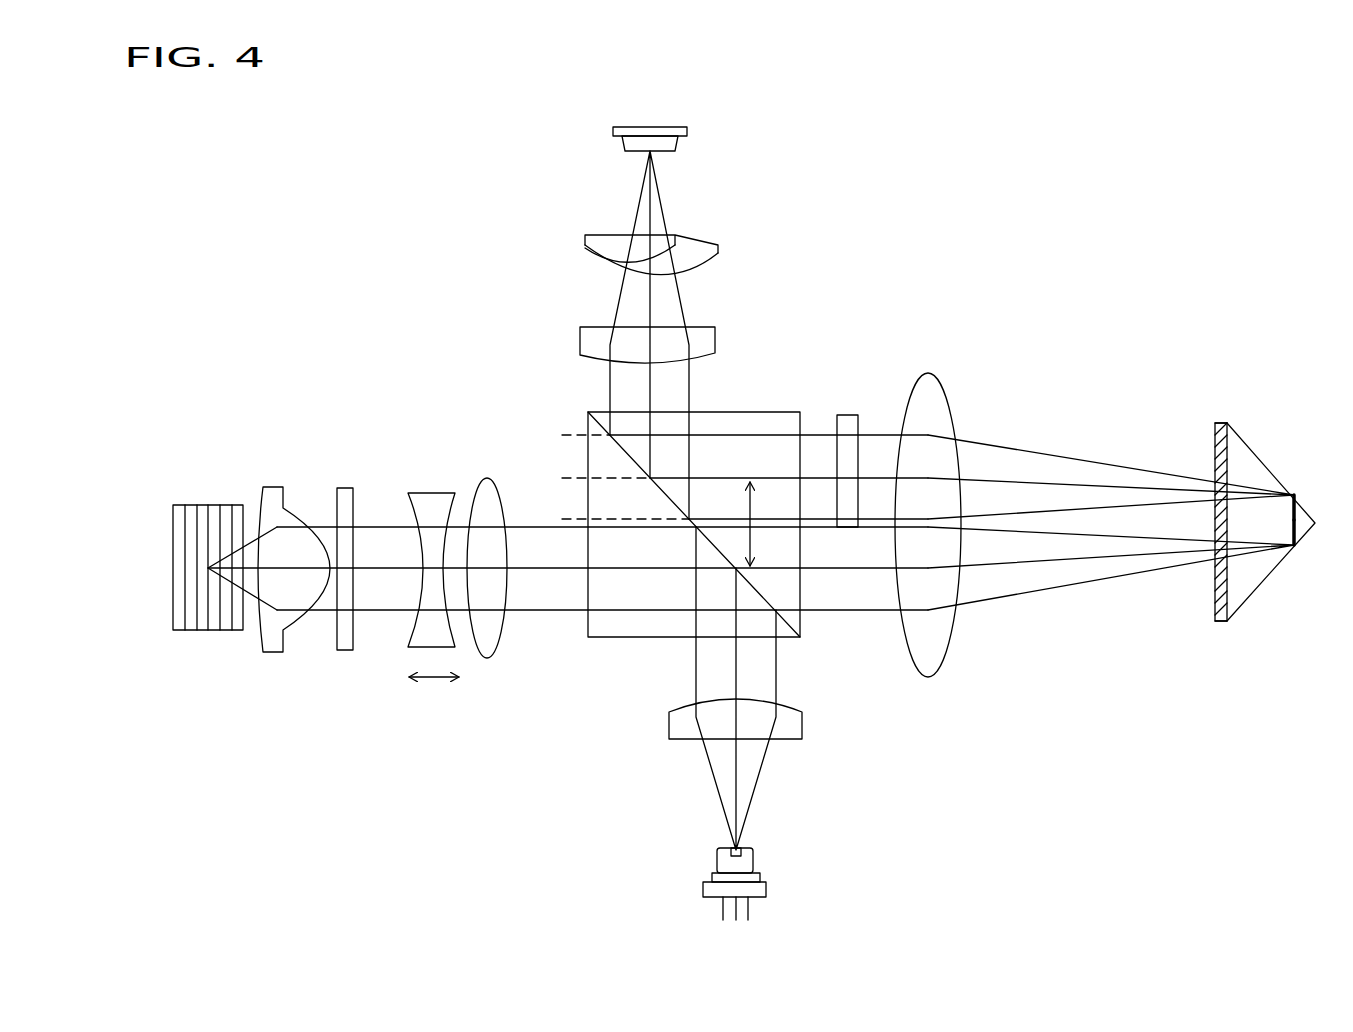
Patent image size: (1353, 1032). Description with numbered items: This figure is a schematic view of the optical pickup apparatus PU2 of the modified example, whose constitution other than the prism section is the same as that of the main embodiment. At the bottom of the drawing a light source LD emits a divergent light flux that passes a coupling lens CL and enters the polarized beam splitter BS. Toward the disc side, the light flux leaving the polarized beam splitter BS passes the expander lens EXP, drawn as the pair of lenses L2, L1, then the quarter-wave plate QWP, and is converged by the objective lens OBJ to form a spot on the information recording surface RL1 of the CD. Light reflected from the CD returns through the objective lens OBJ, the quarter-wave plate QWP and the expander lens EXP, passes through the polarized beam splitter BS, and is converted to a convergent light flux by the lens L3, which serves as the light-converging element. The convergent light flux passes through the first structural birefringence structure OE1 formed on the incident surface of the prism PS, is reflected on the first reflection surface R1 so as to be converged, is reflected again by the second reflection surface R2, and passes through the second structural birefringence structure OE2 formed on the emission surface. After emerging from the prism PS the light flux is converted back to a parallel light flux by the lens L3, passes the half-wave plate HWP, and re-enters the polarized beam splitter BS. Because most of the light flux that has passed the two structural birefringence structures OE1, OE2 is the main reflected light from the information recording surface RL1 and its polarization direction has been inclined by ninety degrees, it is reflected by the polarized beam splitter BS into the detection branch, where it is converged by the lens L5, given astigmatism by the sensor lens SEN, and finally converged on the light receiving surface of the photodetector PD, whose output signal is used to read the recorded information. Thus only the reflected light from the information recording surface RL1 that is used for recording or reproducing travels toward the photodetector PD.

The optical pickup PU2 is at (448, 310).
The element CD is at (207, 632).
The information recording surface RL1 is at (200, 505).
The objective lens OBJ is at (268, 487).
The λ/4 wave plate QWP is at (344, 651).
The expander lens EXP is at (535, 405).
The concave lens L2 is at (433, 493).
The convex lens L1 is at (487, 478).
The polarized beam splitter BS is at (801, 640).
The lens L5 is at (717, 340).
The sensor lens SEN is at (720, 252).
The photodetector PD is at (689, 133).
The λ/2 wave plate HWP is at (847, 413).
The lens L3 is at (928, 677).
The second structural birefringence structure OE2 is at (1222, 423).
The first structural birefringence structure OE1 is at (1220, 621).
The prism PS is at (1265, 600).
The second reflection surface R2 is at (1274, 456).
The reflection surface R1 is at (1294, 565).
The collimator lens CL is at (666, 724).
The laser diode LD is at (755, 862).